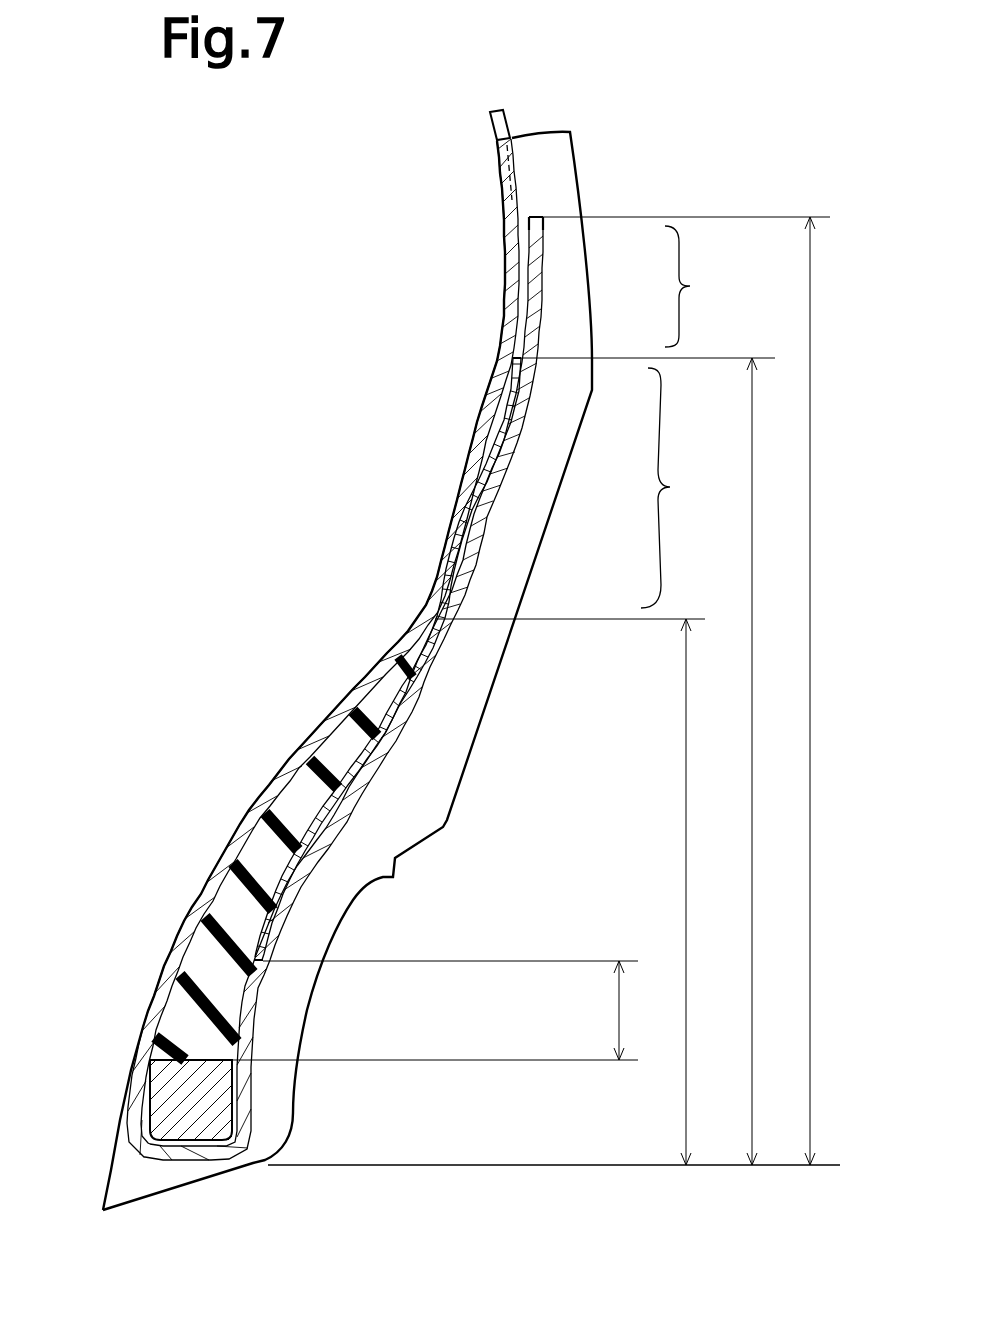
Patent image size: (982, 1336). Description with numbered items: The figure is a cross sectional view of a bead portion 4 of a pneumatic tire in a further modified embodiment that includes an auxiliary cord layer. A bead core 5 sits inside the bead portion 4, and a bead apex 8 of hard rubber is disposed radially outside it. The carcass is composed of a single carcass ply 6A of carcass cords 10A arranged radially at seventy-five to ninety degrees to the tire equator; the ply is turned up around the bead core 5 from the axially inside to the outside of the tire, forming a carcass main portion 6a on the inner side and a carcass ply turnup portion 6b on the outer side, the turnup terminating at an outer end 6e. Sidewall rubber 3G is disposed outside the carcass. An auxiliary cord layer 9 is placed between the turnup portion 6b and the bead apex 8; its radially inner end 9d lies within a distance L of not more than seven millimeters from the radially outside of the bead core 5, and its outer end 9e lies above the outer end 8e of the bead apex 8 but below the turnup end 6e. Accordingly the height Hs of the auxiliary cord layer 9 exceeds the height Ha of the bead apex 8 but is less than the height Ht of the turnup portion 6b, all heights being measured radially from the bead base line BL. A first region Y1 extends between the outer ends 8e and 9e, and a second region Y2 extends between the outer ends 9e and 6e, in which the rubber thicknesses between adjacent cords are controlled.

The sidewall rubber 3G is at (570, 245).
The bead portion 4 is at (142, 935).
The bead core 5 is at (168, 1097).
The carcass ply 6A is at (328, 214).
The carcass main portion 6a is at (512, 275).
The carcass ply turnup portion 6b is at (535, 253).
The outer end of carcass ply turnup portion 6e is at (551, 197).
The bead apex 8 is at (258, 858).
The outer end of bead apex 8e is at (435, 611).
The auxiliary cord layer 9 is at (500, 466).
The outer end of auxiliary cord layer 9e is at (514, 356).
The radially inner end of auxiliary cord layer 9d is at (263, 960).
The carcass cords 10A is at (509, 127).
The height of carcass ply turnup portion Ht is at (690, 691).
The height of auxiliary cord layer Hs is at (652, 761).
The height of bead apex Ha is at (577, 892).
The first region Y1 is at (676, 488).
The second region Y2 is at (697, 286).
The distance from bead core to inner end of auxiliary cord layer L is at (621, 1003).
The bead base line BL is at (572, 1166).